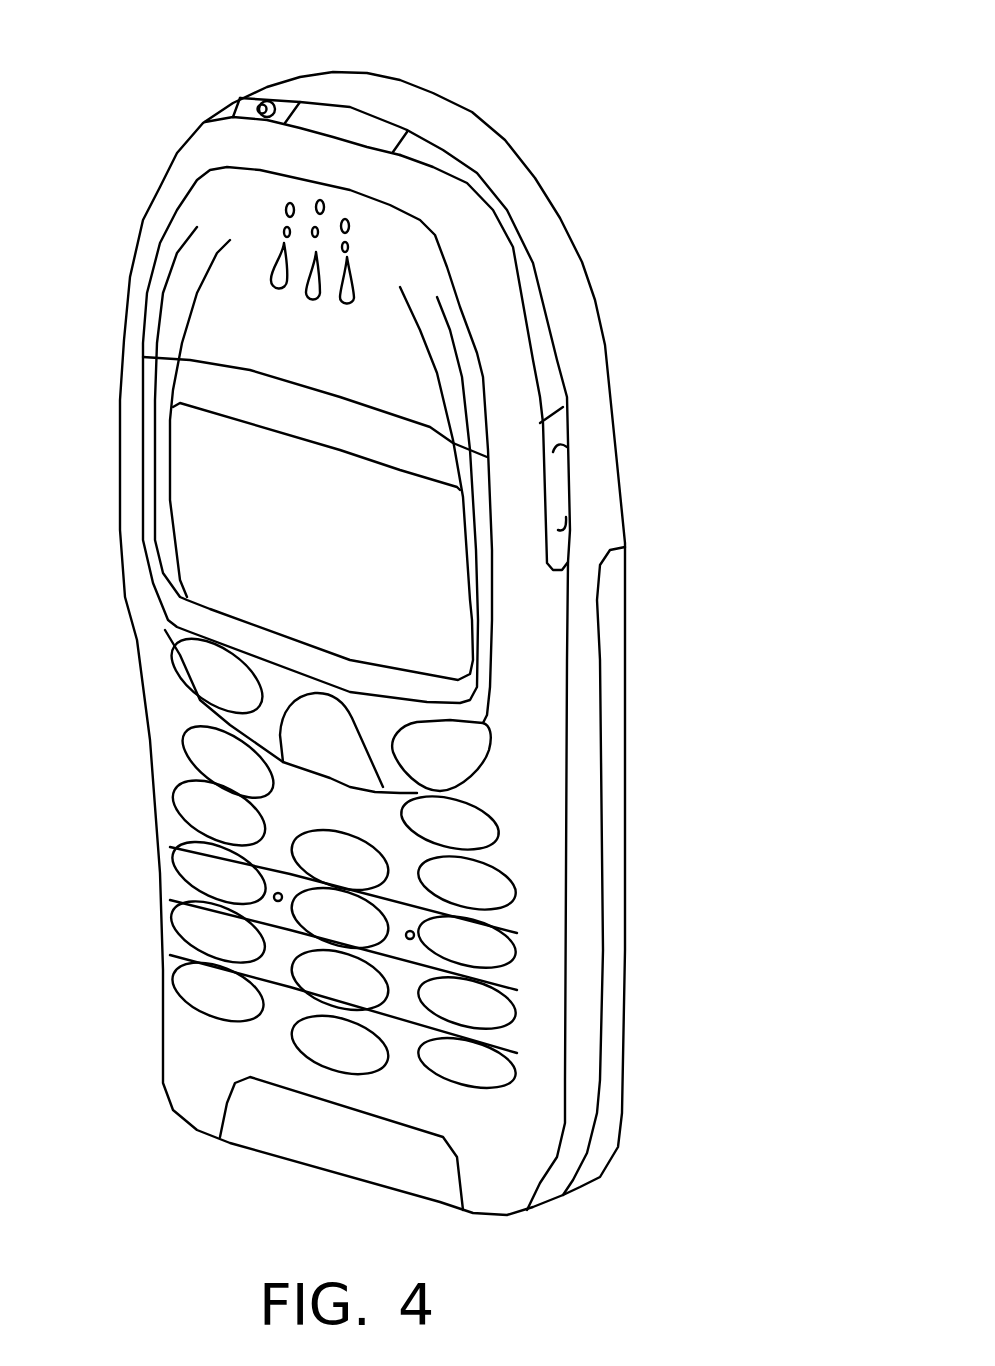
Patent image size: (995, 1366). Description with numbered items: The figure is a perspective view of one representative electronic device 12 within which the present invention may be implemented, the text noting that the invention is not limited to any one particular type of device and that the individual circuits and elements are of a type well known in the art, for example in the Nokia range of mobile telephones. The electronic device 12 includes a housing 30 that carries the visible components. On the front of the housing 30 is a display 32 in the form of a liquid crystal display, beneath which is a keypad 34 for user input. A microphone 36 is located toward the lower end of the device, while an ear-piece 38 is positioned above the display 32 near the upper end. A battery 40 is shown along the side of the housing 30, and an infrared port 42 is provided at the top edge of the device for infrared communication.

The electronic device 12 is at (535, 87).
The housing 30 is at (577, 303).
The display 32 is at (433, 600).
The keypad 34 is at (467, 1073).
The microphone 36 is at (258, 1125).
The ear-piece 38 is at (293, 243).
The battery 40 is at (613, 1047).
The infrared port 42 is at (347, 120).